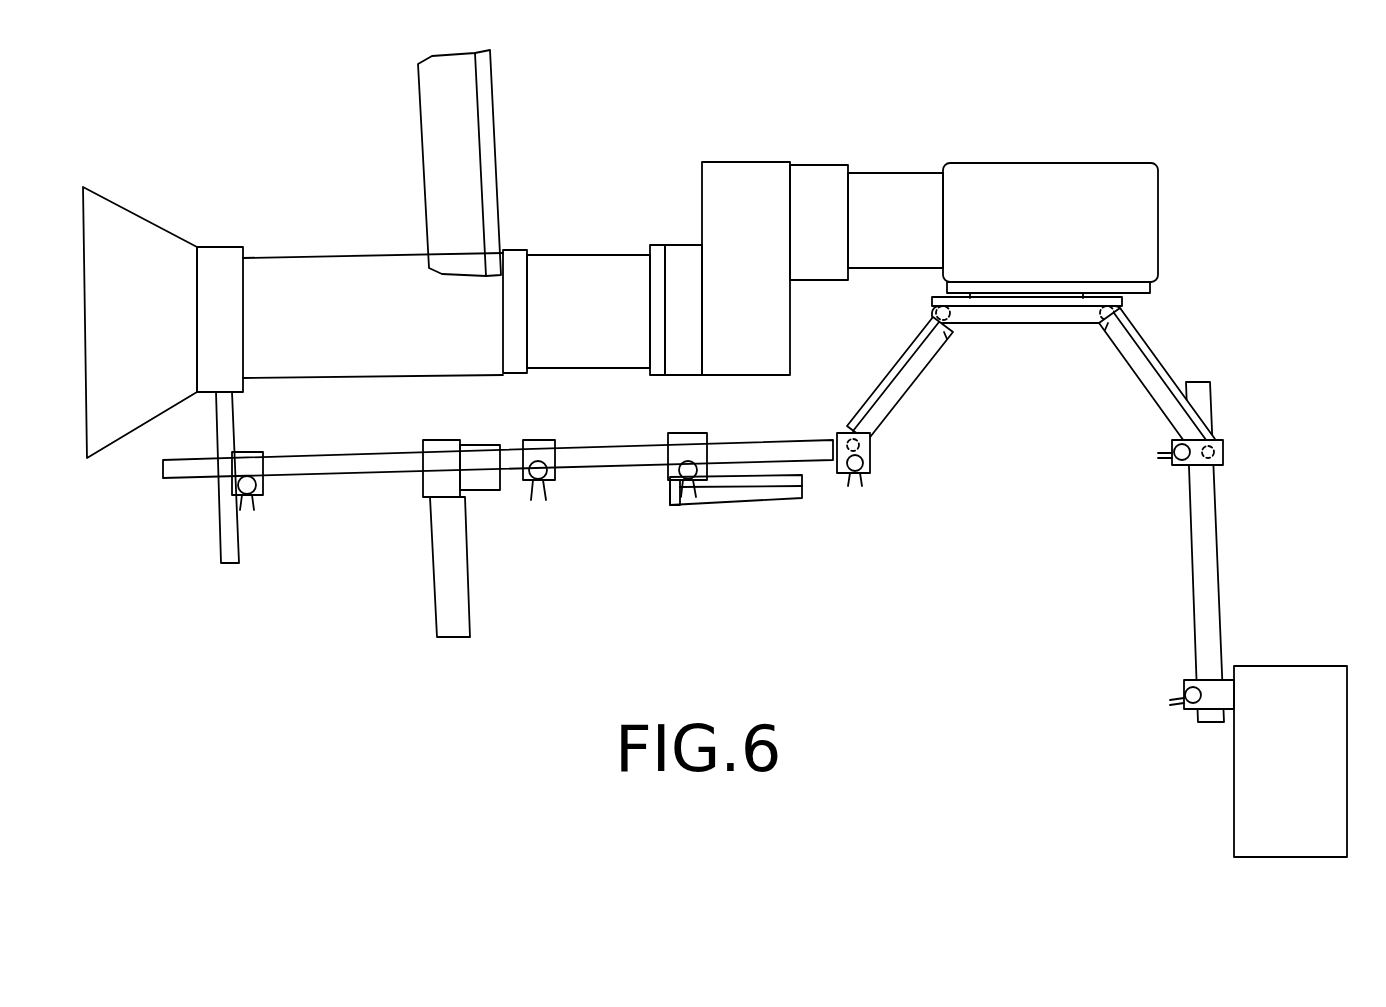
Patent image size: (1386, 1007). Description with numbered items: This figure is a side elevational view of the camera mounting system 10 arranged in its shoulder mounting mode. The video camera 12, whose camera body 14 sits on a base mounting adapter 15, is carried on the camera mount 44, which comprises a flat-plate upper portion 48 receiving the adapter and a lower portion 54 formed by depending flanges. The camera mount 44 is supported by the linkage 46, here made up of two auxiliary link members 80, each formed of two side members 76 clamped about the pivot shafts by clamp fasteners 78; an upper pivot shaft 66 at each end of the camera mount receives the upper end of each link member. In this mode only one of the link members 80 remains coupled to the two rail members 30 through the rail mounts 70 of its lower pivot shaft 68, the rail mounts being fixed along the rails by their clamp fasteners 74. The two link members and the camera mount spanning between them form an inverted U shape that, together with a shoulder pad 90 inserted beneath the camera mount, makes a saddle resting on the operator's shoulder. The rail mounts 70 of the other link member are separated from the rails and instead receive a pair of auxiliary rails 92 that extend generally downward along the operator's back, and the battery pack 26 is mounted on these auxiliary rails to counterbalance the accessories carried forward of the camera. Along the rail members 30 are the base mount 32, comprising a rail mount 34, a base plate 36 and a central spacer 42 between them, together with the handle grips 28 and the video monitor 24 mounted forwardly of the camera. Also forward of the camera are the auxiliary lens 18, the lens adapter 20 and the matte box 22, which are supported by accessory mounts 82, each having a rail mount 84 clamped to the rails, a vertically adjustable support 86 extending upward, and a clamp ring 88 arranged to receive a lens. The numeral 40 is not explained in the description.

The camera mounting system 10 is at (836, 556).
The video camera 12 is at (1048, 148).
The camera body 14 is at (1115, 164).
The adapter 15 is at (1122, 280).
The auxiliary lens 18 is at (580, 248).
The lens adapter 20 is at (742, 162).
The matte box 22 is at (150, 218).
The video monitor 24 is at (437, 128).
The battery pack 26 is at (1290, 665).
The handle grips 28 is at (437, 590).
The rail members 30 is at (345, 480).
The base mount 32 is at (660, 487).
The rail mount 34 is at (687, 433).
The base plate 36 is at (725, 508).
The stop 40 is at (680, 505).
The central spacer 42 is at (760, 482).
The camera mount 44 is at (990, 292).
The linkage 46 is at (1180, 315).
The upper portion 48 is at (930, 298).
The lower portion 54 is at (1028, 316).
The upper pivot shaft 66 is at (930, 316).
The lower pivot shaft 68 is at (866, 458).
The rail mounts 70 is at (849, 480).
The clamp fasteners 74 is at (851, 482).
The side members 76 is at (1185, 372).
The clamp fasteners 78 is at (953, 352).
The auxiliary link members 80 is at (900, 357).
The accessory mount 82 is at (240, 225).
The rail mount 84 is at (266, 486).
The vertically adjustable support 86 is at (235, 407).
The clamp ring 88 is at (245, 300).
The shoulder pad 90 is at (935, 408).
The auxiliary rails 92 is at (1218, 575).